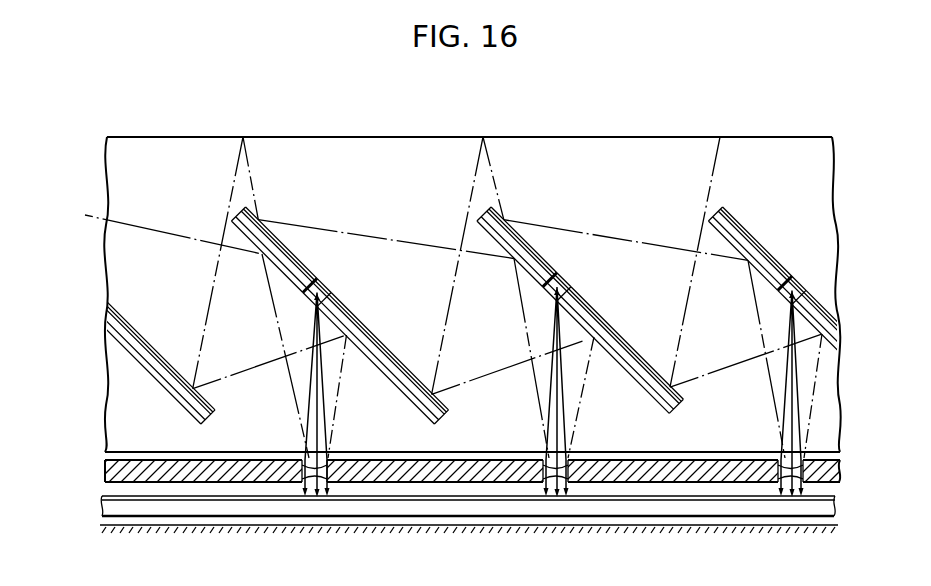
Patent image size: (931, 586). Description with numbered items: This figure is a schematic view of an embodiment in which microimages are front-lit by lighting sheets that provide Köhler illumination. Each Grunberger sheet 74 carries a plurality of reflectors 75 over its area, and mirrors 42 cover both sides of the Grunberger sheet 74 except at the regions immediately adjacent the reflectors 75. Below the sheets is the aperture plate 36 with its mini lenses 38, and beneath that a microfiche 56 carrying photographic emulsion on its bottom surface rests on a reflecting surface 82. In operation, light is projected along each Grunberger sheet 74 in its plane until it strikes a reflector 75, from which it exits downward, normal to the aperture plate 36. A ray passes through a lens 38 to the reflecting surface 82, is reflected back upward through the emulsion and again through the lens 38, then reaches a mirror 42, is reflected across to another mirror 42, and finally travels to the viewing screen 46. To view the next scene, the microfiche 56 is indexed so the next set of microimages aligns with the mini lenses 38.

The viewing screen 46 is at (597, 135).
The Grunberger sheet 74 is at (278, 251).
The reflector 75 is at (326, 303).
The mirror 42 is at (162, 357).
The aperture plate 36 is at (503, 469).
The mini lens 38 is at (303, 459).
The microfiche 56 is at (148, 507).
The reflecting surface 82 is at (363, 510).